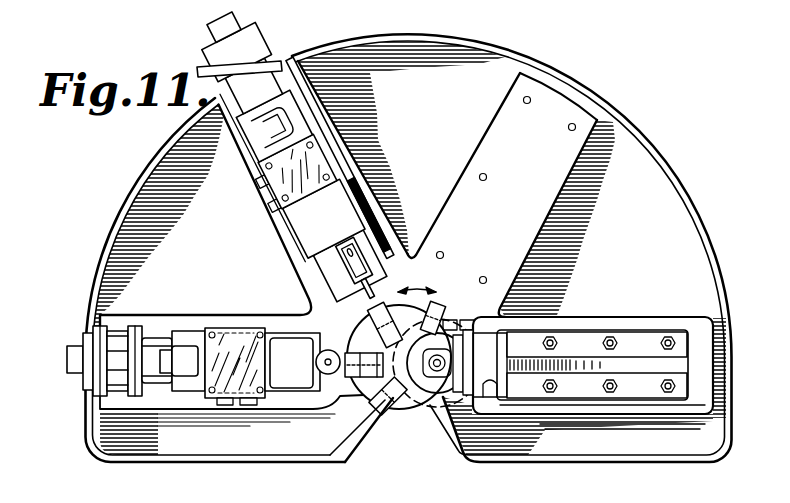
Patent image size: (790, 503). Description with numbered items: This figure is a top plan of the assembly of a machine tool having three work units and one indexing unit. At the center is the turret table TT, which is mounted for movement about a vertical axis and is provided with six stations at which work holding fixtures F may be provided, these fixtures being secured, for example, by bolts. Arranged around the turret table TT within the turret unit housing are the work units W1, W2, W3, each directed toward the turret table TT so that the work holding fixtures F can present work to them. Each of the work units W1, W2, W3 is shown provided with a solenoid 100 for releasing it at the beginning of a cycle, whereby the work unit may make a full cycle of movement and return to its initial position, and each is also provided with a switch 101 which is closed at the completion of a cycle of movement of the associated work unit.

The work unit W1 is at (470, 350).
The work unit W2 is at (357, 193).
The work unit W3 is at (247, 326).
The solenoid 100 is at (220, 407).
The switch 101 is at (250, 407).
The work holding fixture F is at (368, 318).
The turret table TT is at (362, 443).